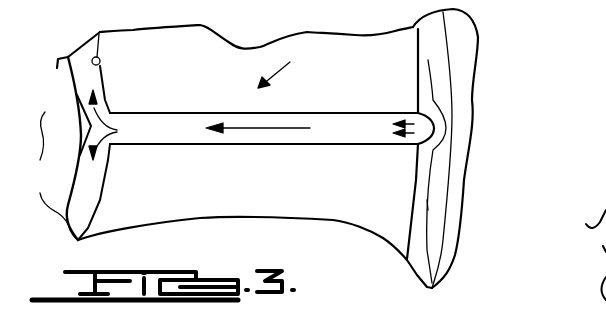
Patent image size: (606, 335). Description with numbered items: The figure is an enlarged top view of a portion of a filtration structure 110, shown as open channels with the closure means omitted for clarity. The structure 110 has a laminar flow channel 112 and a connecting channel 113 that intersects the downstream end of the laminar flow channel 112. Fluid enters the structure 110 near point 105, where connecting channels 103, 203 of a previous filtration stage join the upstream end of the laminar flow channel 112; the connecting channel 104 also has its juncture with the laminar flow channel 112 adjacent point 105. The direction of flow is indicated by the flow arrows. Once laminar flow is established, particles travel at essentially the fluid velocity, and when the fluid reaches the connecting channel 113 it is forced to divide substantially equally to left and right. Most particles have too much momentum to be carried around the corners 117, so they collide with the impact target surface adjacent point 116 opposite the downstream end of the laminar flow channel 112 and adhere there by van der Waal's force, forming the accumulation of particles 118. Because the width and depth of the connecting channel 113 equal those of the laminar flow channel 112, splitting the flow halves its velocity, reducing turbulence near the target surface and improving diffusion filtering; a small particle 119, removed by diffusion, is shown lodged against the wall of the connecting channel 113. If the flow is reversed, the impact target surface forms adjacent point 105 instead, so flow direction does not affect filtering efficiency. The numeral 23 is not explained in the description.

The glove body 23 is at (214, 22).
The connecting channel 103 is at (443, 242).
The connecting channel 104 is at (450, 60).
The point 105 is at (452, 128).
The filtration structure 110 is at (303, 67).
The laminar flow channel 112 is at (298, 113).
The connecting channel 113 is at (110, 88).
The point 116 is at (50, 176).
The corners 117 is at (112, 109).
The accumulation of particles 118 is at (72, 118).
The small particle 119 is at (118, 32).
The connecting channel 203 is at (450, 23).